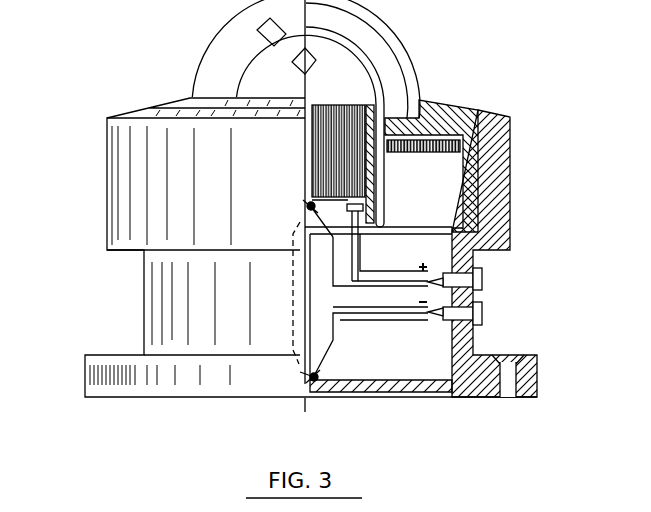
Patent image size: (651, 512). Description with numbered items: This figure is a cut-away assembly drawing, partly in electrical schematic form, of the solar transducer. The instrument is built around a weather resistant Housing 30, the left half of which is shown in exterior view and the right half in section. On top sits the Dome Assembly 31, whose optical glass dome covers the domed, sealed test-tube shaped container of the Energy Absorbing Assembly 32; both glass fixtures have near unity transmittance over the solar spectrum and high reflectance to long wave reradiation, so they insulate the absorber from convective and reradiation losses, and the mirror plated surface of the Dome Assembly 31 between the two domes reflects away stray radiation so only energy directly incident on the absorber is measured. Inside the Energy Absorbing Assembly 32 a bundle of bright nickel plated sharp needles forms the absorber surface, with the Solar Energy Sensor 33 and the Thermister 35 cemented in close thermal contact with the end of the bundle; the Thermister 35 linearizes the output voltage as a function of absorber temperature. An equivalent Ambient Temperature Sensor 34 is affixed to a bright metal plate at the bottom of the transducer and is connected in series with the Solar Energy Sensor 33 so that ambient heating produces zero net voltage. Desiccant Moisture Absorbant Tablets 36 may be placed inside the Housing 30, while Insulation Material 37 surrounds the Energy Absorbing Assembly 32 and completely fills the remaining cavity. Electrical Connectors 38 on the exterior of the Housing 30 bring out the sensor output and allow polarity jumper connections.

The housing 30 is at (107, 186).
The dome assembly 31 is at (213, 55).
The energy absorbing assembly 32 is at (378, 87).
The solar energy sensor 33 is at (306, 204).
The ambient temperature sensor 34 is at (316, 380).
The thermister 35 is at (357, 198).
The desiccant moisture absorbant tablets 36 is at (437, 142).
The insulation material 37 is at (415, 255).
The electrical connectors 38 is at (483, 312).